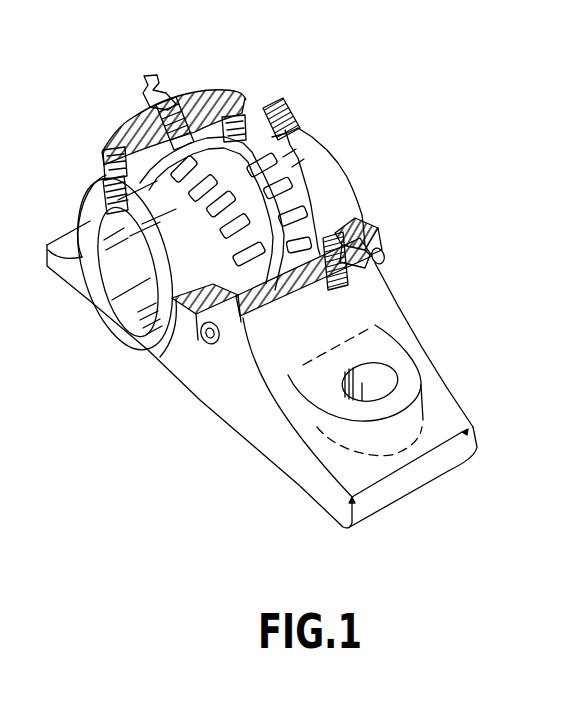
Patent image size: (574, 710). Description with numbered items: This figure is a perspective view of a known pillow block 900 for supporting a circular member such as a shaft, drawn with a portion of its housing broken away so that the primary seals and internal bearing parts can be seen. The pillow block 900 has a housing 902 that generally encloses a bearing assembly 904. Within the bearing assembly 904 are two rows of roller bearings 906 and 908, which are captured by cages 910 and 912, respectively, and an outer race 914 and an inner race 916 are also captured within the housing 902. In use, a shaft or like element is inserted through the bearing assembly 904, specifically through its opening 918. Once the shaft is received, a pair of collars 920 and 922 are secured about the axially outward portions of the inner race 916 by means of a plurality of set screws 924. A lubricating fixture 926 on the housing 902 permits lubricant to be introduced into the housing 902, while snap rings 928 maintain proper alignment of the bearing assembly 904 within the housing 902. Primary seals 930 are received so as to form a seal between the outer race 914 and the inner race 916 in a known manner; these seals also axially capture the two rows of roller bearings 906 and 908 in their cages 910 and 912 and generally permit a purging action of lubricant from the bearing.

The pillow block 900 is at (258, 54).
The housing 902 is at (373, 307).
The bearing assembly 904 is at (347, 200).
The roller bearings 906 is at (222, 258).
The roller bearings 908 is at (295, 184).
The cage 910 is at (207, 235).
The cage 912 is at (283, 168).
The outer race 914 is at (209, 97).
The inner race 916 is at (149, 282).
The opening 918 is at (132, 303).
The collar 920 is at (163, 352).
The collar 922 is at (383, 233).
The set screws 924 is at (100, 172).
The lubricating fixture 926 is at (172, 95).
The snap rings 928 is at (335, 283).
The primary seals 930 is at (106, 158).